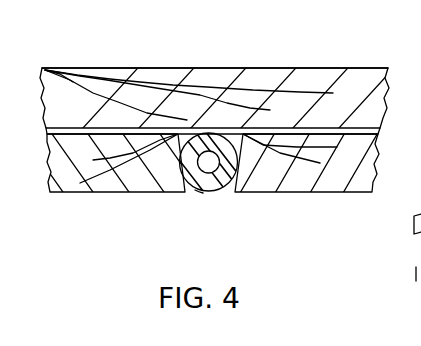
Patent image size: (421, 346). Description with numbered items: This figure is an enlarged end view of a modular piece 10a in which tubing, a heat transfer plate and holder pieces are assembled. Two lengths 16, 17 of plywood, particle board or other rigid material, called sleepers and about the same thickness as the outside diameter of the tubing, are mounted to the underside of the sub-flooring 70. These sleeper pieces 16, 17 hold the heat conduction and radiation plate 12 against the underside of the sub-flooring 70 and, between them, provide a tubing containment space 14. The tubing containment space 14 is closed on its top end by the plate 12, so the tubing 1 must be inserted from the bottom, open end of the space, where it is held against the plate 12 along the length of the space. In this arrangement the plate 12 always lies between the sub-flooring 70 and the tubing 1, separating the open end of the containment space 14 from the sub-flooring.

The modular piece 10a is at (348, 46).
The heat conduction and radiation plate 12 is at (115, 127).
The sub-flooring 70 is at (211, 68).
The sleeper piece 16 is at (130, 193).
The sleeper piece 17 is at (275, 193).
The tubing containment space 14 is at (229, 201).
The tubing 1 is at (203, 193).